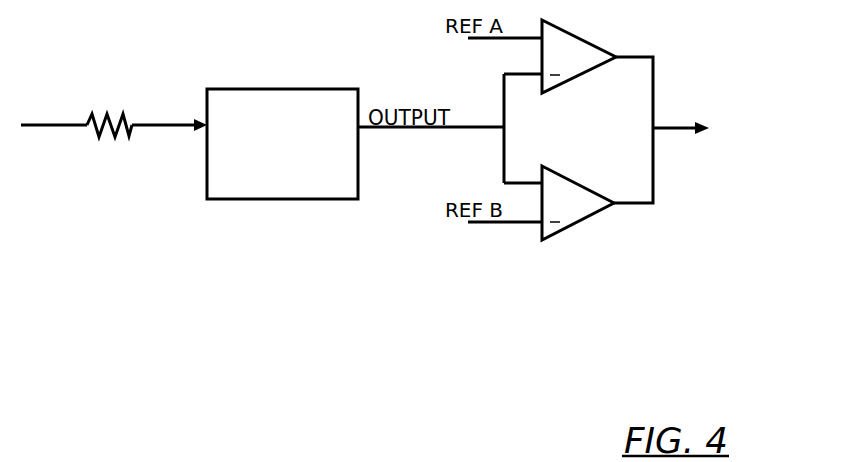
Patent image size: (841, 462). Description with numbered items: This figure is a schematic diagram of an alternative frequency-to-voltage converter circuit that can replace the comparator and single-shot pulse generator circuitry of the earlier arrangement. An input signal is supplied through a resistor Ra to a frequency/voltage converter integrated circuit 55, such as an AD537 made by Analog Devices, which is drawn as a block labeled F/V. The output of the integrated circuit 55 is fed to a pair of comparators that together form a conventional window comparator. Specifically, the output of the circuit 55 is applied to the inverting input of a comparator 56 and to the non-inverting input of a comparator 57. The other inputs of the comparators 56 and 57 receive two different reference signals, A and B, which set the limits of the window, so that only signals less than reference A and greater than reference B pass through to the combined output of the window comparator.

The resistor Ra is at (87, 122).
The frequency/voltage converter integrated circuit 55 is at (262, 200).
The comparator 56 is at (568, 80).
The comparator 57 is at (568, 225).